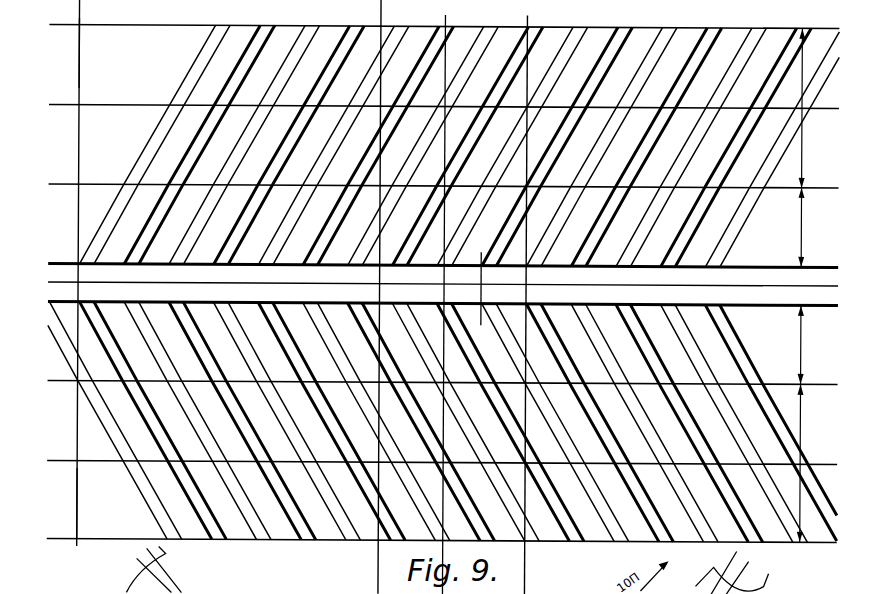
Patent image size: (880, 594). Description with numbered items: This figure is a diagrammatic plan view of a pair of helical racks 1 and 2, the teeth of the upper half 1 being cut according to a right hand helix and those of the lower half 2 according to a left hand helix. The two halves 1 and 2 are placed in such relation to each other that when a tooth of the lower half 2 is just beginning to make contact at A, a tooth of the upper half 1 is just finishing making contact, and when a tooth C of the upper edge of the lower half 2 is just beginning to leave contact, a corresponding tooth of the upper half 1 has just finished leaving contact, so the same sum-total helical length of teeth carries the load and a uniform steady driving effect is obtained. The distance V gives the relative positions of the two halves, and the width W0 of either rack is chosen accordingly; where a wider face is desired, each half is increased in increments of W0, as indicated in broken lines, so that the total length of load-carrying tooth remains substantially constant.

The helical rack 1 is at (176, 266).
The helical rack 2 is at (219, 300).
The contact point A is at (529, 304).
The tooth C is at (454, 304).
The distance V is at (503, 288).
The width of gear W0 is at (808, 285).